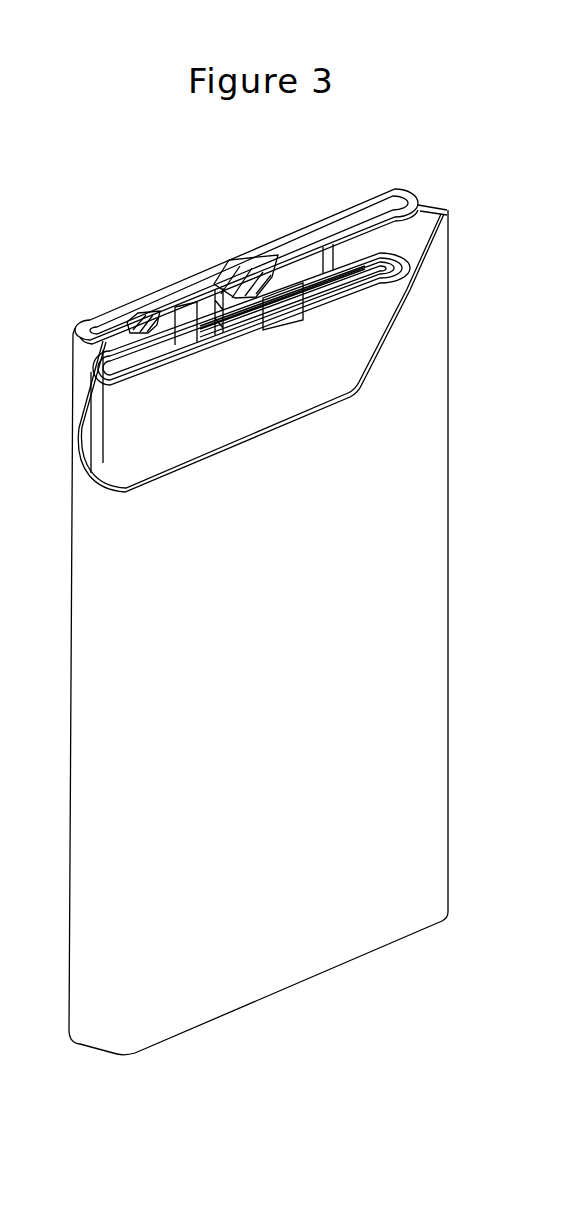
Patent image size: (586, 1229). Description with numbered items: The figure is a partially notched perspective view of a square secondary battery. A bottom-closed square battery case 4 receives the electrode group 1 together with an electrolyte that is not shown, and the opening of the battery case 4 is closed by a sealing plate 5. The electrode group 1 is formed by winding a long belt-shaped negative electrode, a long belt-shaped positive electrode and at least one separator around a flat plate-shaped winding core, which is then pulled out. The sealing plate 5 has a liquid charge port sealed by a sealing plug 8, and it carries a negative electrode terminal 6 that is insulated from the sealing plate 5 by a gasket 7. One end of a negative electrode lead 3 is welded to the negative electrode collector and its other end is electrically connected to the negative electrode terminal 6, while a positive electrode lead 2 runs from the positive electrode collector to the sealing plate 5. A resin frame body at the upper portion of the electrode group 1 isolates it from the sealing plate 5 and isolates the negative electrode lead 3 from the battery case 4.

The electrode group 1 is at (263, 417).
The positive electrode lead 2 is at (185, 343).
The negative electrode lead 3 is at (292, 300).
The battery case 4 is at (417, 780).
The sealing plate 5 is at (308, 245).
The negative electrode terminal 6 is at (258, 262).
The gasket 7 is at (210, 270).
The sealing plug 8 is at (132, 310).